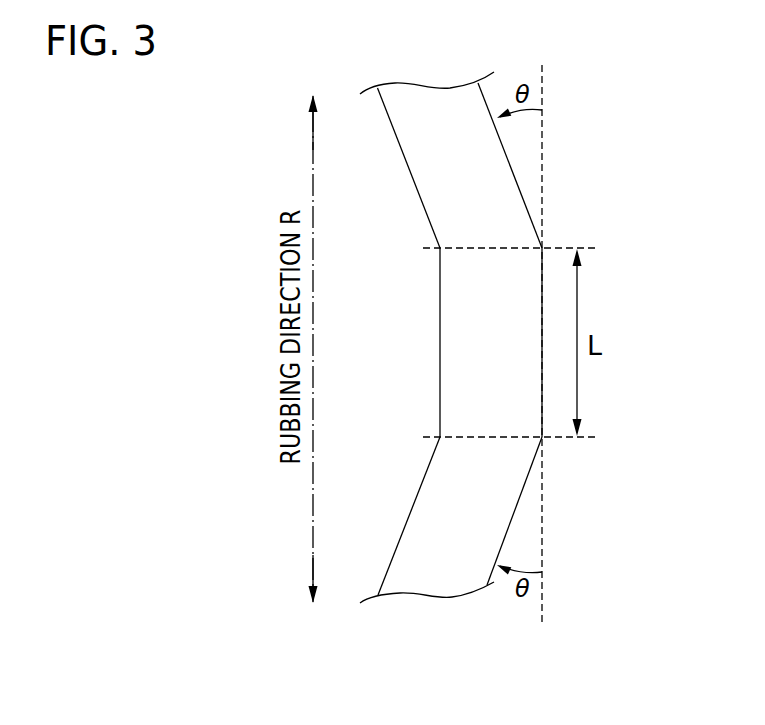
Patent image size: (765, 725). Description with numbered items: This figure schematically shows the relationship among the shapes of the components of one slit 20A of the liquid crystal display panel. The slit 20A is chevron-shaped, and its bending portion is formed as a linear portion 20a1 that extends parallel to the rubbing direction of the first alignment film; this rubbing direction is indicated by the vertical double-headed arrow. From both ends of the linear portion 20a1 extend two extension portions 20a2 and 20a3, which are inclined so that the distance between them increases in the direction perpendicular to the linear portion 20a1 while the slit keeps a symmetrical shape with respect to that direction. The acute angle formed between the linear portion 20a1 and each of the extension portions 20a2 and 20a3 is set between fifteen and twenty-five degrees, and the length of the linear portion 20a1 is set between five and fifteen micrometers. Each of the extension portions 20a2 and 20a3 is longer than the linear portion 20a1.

The slit 20A is at (150, 114).
The linear portion 20a1 is at (441, 344).
The extension portion 20a2 is at (500, 150).
The extension portion 20a3 is at (507, 525).